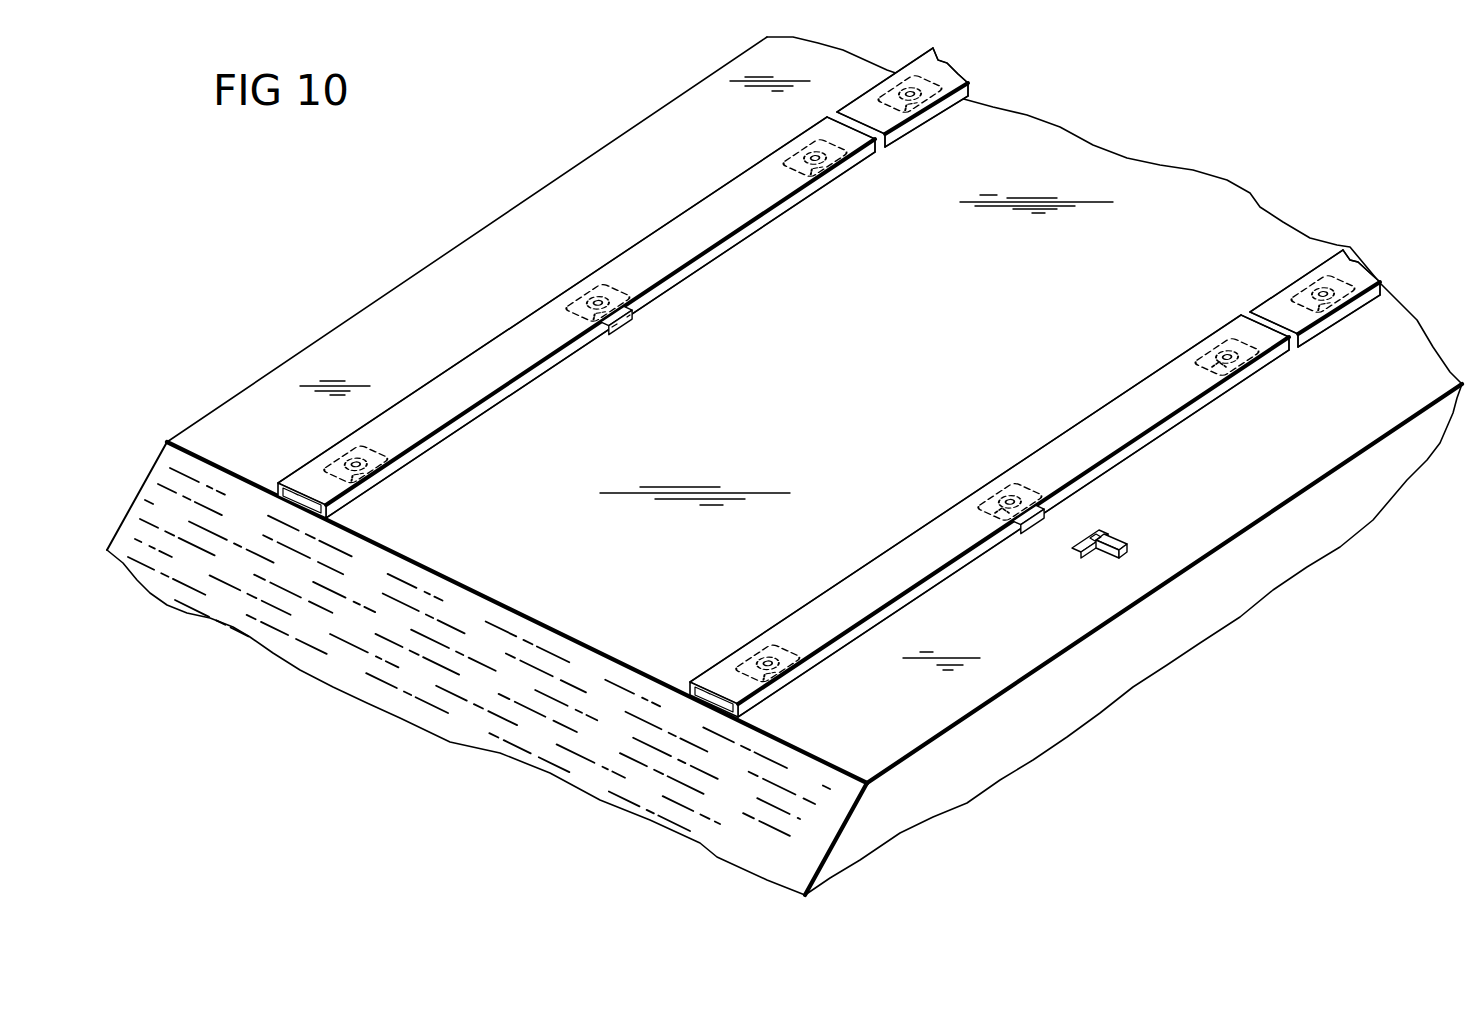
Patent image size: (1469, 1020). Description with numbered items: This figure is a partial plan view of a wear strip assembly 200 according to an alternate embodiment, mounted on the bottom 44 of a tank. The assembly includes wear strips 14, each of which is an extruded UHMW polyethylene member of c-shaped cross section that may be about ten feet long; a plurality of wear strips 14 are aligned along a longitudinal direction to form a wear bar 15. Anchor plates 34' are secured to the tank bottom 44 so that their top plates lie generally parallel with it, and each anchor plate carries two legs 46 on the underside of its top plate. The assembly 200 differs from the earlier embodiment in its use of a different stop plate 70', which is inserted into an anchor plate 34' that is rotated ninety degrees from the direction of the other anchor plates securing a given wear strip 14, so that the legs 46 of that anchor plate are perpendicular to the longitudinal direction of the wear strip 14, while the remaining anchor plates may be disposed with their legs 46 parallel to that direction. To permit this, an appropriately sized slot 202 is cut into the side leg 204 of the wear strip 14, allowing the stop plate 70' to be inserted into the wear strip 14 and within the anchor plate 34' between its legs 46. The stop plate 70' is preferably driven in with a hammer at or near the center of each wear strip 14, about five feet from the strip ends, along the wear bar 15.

The wear strip 14 is at (716, 192).
The wear bar 15 is at (838, 92).
The anchor plate 34' is at (819, 378).
The bottom of the tank 44 is at (880, 369).
The legs 46 is at (973, 517).
The stop plate 70' is at (887, 432).
The wear strip assembly 200 is at (613, 166).
The slot 202 is at (1030, 530).
The side leg 204 is at (1167, 428).